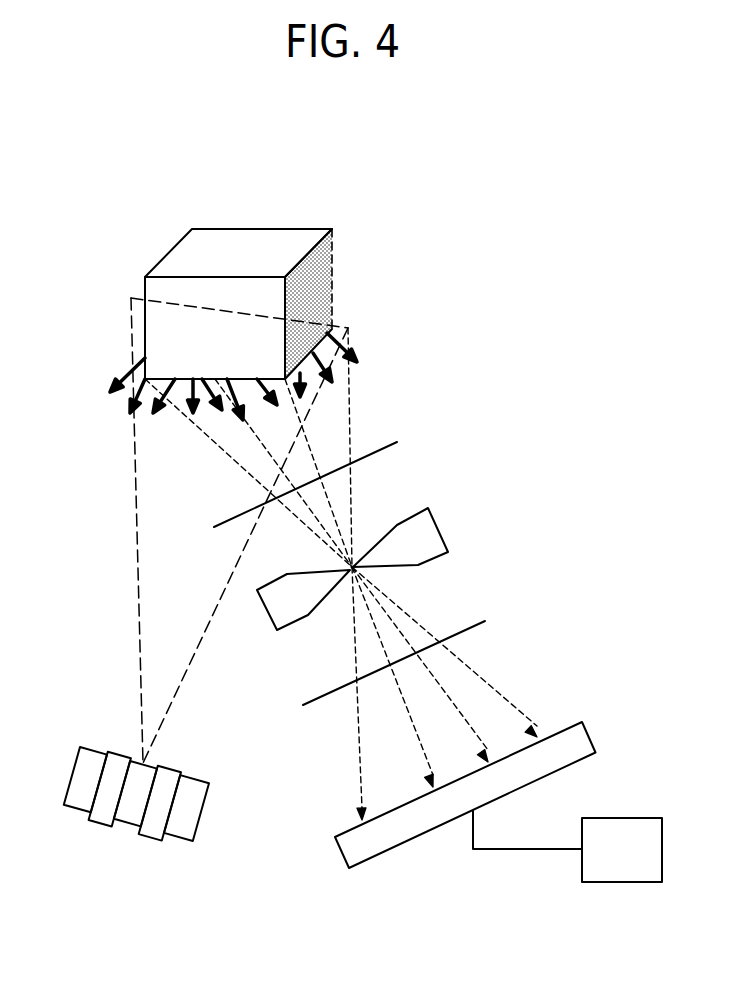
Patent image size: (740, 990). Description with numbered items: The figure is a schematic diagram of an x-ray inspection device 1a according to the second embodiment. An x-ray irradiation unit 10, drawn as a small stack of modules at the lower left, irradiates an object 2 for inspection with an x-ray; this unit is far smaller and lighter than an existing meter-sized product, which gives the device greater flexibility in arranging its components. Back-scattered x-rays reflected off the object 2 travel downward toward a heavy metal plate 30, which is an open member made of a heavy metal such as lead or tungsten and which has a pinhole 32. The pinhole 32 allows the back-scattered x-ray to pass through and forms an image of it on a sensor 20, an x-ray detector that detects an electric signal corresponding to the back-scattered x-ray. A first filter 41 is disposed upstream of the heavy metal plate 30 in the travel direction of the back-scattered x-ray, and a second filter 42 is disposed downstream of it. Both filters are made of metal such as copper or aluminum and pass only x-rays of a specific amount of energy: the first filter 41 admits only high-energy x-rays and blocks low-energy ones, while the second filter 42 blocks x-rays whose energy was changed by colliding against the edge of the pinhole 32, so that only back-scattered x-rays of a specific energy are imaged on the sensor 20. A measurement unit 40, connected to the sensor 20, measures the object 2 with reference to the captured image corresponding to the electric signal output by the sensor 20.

The x-ray inspection device 1a is at (562, 262).
The object for inspection 2 is at (170, 251).
The x-ray irradiation unit 10 is at (70, 773).
The first filter 41 is at (397, 442).
The pinhole 32 is at (354, 563).
The heavy metal plate 30 is at (428, 510).
The second filter 42 is at (485, 621).
The sensor 20 is at (590, 728).
The measurement unit 40 is at (623, 818).